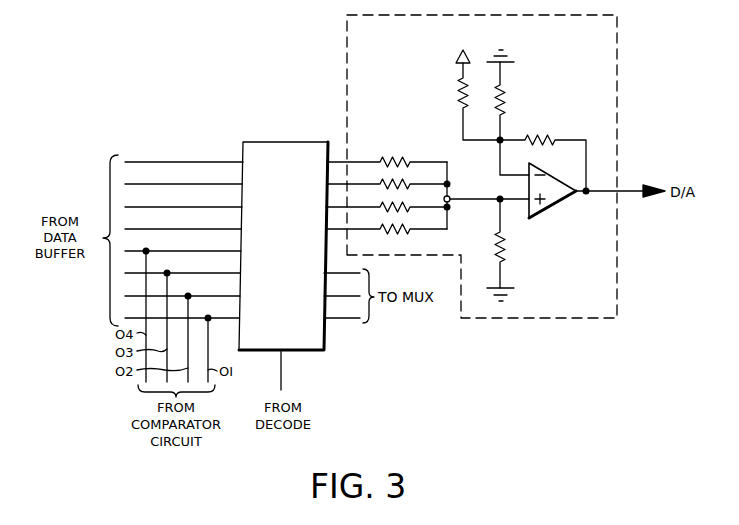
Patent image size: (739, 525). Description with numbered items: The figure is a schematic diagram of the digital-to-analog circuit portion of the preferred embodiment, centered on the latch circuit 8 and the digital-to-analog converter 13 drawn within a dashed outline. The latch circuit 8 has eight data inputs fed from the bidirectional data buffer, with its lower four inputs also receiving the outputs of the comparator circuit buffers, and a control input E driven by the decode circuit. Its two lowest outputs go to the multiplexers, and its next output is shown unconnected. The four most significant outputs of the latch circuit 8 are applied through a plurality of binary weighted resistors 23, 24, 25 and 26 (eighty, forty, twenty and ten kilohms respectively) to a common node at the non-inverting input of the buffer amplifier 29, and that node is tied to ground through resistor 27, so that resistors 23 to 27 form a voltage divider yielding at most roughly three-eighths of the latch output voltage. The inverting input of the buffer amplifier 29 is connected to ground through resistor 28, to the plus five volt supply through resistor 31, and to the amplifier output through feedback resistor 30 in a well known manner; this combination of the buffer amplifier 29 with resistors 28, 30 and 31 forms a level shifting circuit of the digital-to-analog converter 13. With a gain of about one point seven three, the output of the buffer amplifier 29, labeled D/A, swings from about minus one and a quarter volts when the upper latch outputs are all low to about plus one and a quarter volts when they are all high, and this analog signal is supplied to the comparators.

The latch circuit 8 is at (278, 142).
The digital-to-analog converter 13 is at (553, 16).
The resistor 23 is at (411, 231).
The resistor 24 is at (410, 209).
The resistor 25 is at (410, 184).
The resistor 26 is at (392, 160).
The resistor 27 is at (505, 247).
The resistor 28 is at (506, 104).
The buffer amplifier 29 is at (549, 208).
The feedback resistor 30 is at (538, 140).
The resistor 31 is at (458, 92).